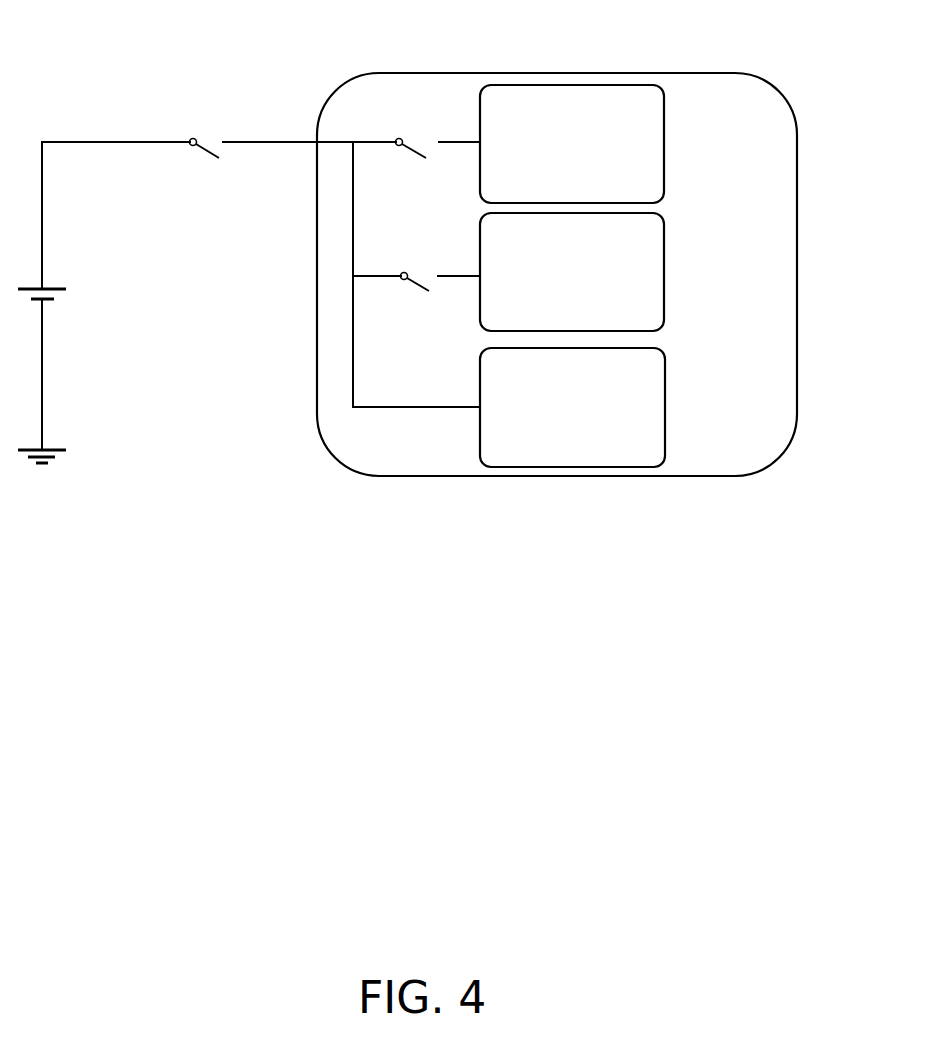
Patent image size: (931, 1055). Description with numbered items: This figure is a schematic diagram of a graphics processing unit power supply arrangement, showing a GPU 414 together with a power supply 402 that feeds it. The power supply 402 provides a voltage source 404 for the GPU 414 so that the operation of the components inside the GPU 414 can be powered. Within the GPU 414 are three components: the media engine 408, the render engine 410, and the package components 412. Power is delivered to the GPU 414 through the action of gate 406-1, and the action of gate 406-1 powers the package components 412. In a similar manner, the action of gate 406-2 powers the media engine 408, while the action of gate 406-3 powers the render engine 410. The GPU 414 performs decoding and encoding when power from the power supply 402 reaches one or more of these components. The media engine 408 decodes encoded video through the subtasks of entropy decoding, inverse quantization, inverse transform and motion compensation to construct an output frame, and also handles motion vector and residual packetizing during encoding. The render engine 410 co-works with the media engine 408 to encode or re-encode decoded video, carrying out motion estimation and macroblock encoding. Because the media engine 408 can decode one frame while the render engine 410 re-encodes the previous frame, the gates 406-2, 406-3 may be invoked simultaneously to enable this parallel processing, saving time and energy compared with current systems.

The power supply 402 is at (76, 436).
The voltage source 404 is at (76, 278).
The gate 406-1 is at (193, 122).
The gate 406-2 is at (403, 120).
The gate 406-3 is at (402, 260).
The media engine 408 is at (665, 125).
The render engine 410 is at (665, 235).
The package components 412 is at (666, 405).
The GPU 414 is at (797, 242).